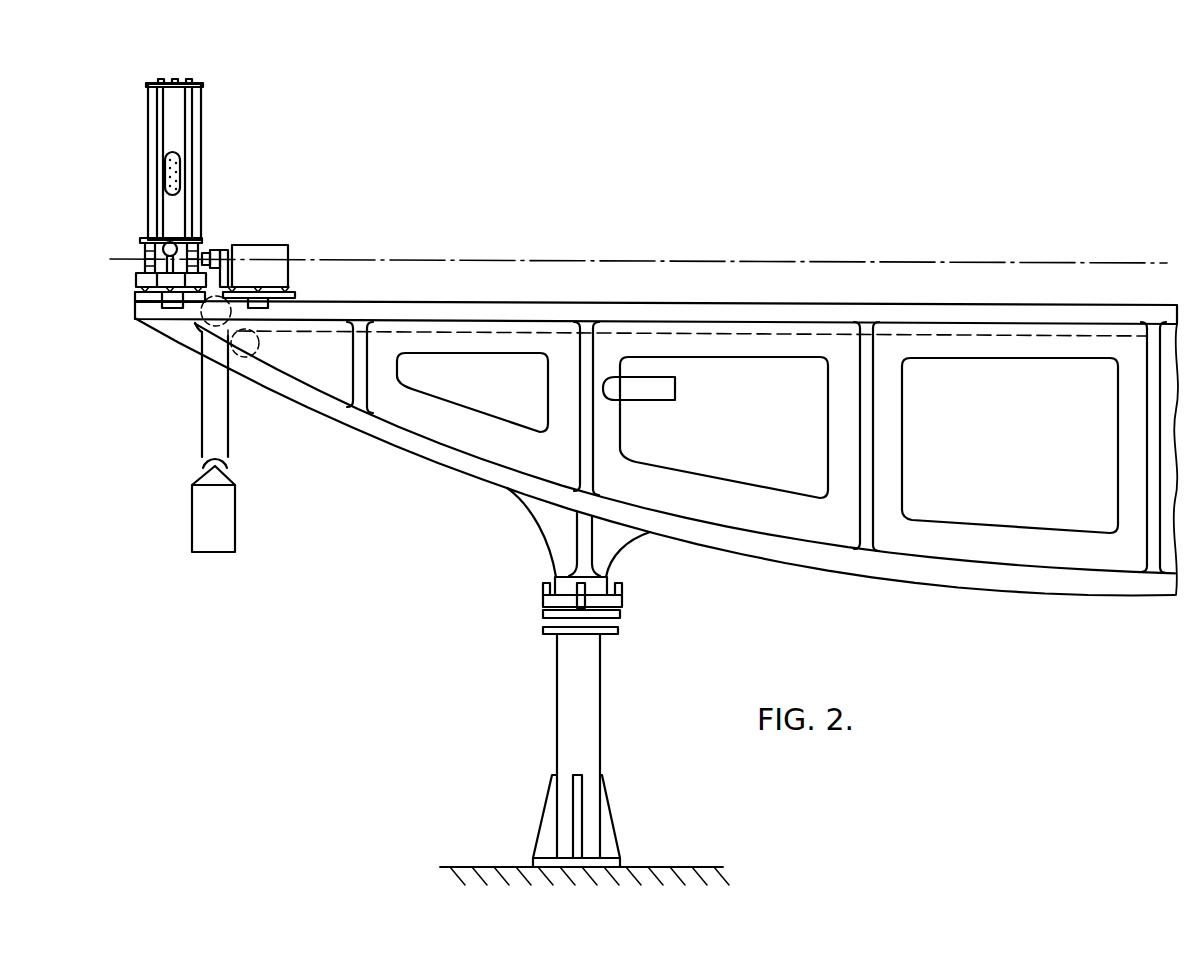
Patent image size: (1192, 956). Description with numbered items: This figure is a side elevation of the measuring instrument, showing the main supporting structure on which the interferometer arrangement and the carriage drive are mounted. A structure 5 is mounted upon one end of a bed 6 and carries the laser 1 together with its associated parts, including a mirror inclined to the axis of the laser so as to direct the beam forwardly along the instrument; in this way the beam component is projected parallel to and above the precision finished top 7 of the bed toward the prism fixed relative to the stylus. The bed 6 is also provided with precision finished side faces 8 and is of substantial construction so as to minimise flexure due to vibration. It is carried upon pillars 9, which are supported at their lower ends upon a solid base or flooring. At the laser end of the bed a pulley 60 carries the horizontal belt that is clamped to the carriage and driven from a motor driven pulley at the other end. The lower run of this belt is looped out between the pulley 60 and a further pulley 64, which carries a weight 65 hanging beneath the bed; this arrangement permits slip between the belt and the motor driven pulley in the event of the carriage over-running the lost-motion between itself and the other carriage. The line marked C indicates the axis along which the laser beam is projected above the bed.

The laser 1 is at (182, 175).
The structure 5 is at (134, 209).
The bed 6 is at (135, 308).
The precision finished top 7 is at (660, 303).
The precision finished side faces 8 is at (455, 307).
The pillars 9 is at (592, 710).
The pulley 60 is at (200, 337).
The pulley 64 is at (247, 357).
The weight 65 is at (225, 528).
The center line C is at (1022, 263).